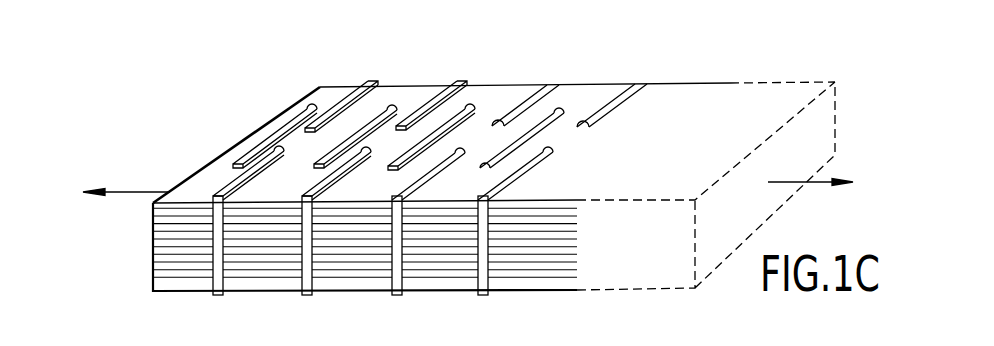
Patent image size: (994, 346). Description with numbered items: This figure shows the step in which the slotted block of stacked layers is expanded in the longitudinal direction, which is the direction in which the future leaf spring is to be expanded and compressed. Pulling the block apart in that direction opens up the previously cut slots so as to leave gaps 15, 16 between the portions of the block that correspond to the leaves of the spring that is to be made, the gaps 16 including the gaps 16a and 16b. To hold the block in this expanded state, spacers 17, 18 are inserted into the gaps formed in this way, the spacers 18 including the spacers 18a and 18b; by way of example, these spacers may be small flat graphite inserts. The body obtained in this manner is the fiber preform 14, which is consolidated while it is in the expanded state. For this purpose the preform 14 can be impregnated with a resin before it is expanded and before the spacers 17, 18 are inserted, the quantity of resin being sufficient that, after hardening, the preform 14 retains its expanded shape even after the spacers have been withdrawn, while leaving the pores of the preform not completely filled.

The fiber preform 14 is at (748, 64).
The gap 15 is at (556, 113).
The gap 16 is at (516, 81).
The gap 16a is at (622, 92).
The gap 16b is at (525, 172).
The spacer 17 is at (267, 137).
The spacer 18 is at (437, 93).
The spacer 18a is at (238, 182).
The spacer 18b is at (368, 92).